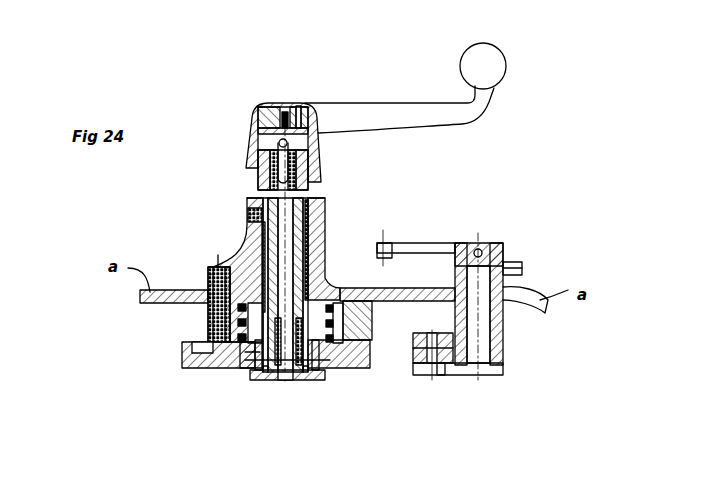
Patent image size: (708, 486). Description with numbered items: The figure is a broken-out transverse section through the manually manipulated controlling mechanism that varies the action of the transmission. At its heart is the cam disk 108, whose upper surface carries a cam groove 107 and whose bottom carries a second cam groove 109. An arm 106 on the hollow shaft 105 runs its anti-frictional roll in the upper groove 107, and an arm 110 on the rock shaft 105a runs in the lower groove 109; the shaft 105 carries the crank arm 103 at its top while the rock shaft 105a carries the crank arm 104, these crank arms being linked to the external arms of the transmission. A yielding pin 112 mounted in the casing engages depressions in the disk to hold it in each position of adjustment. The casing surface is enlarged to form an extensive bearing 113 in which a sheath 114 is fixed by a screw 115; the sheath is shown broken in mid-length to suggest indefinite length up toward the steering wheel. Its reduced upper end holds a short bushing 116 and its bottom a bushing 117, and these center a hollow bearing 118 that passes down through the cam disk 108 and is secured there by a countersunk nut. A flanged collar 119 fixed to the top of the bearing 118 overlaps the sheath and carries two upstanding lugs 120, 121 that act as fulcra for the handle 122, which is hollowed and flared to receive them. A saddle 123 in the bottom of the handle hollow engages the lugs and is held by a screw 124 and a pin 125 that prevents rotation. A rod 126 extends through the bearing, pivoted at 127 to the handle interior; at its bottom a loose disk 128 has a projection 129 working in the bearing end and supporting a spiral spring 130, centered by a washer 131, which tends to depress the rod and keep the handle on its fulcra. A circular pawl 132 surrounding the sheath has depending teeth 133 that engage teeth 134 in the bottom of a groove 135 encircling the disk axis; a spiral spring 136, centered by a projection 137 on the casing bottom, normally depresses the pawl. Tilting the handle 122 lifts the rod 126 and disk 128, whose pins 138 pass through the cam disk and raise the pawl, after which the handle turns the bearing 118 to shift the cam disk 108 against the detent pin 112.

The crank arm 103 is at (522, 268).
The crank arm 104 is at (420, 246).
The hollow shaft 105 is at (458, 292).
The rock shaft 105a is at (482, 328).
The arm 106 is at (445, 334).
The cam groove 107 is at (200, 344).
The cam disk 108 is at (182, 362).
The cam groove 109 is at (432, 376).
The arm 110 is at (470, 376).
The yielding pin 112 is at (207, 312).
The bearing 113 is at (318, 218).
The sheath 114 is at (245, 250).
The screw 115 is at (248, 214).
The bushing 116 is at (258, 180).
The bushing 117 is at (250, 362).
The hollow bearing 118 is at (298, 247).
The flanged collar 119 is at (312, 146).
The upstanding lug 120 is at (258, 134).
The upstanding lug 121 is at (302, 128).
The handle 122 is at (484, 54).
The saddle 123 is at (267, 110).
The screw 124 is at (286, 111).
The pin 125 is at (321, 104).
The rod 126 is at (287, 272).
The pivot 127 is at (290, 152).
The disk 128 is at (292, 382).
The projection 129 is at (300, 380).
The spiral spring 130 is at (328, 369).
The washer 131 is at (336, 316).
The circular pawl 132 is at (255, 352).
The depending teeth 133 is at (350, 350).
The teeth 134 is at (262, 356).
The groove 135 is at (258, 368).
The spiral spring 136 is at (340, 331).
The projection 137 is at (385, 288).
The pins 138 is at (315, 380).